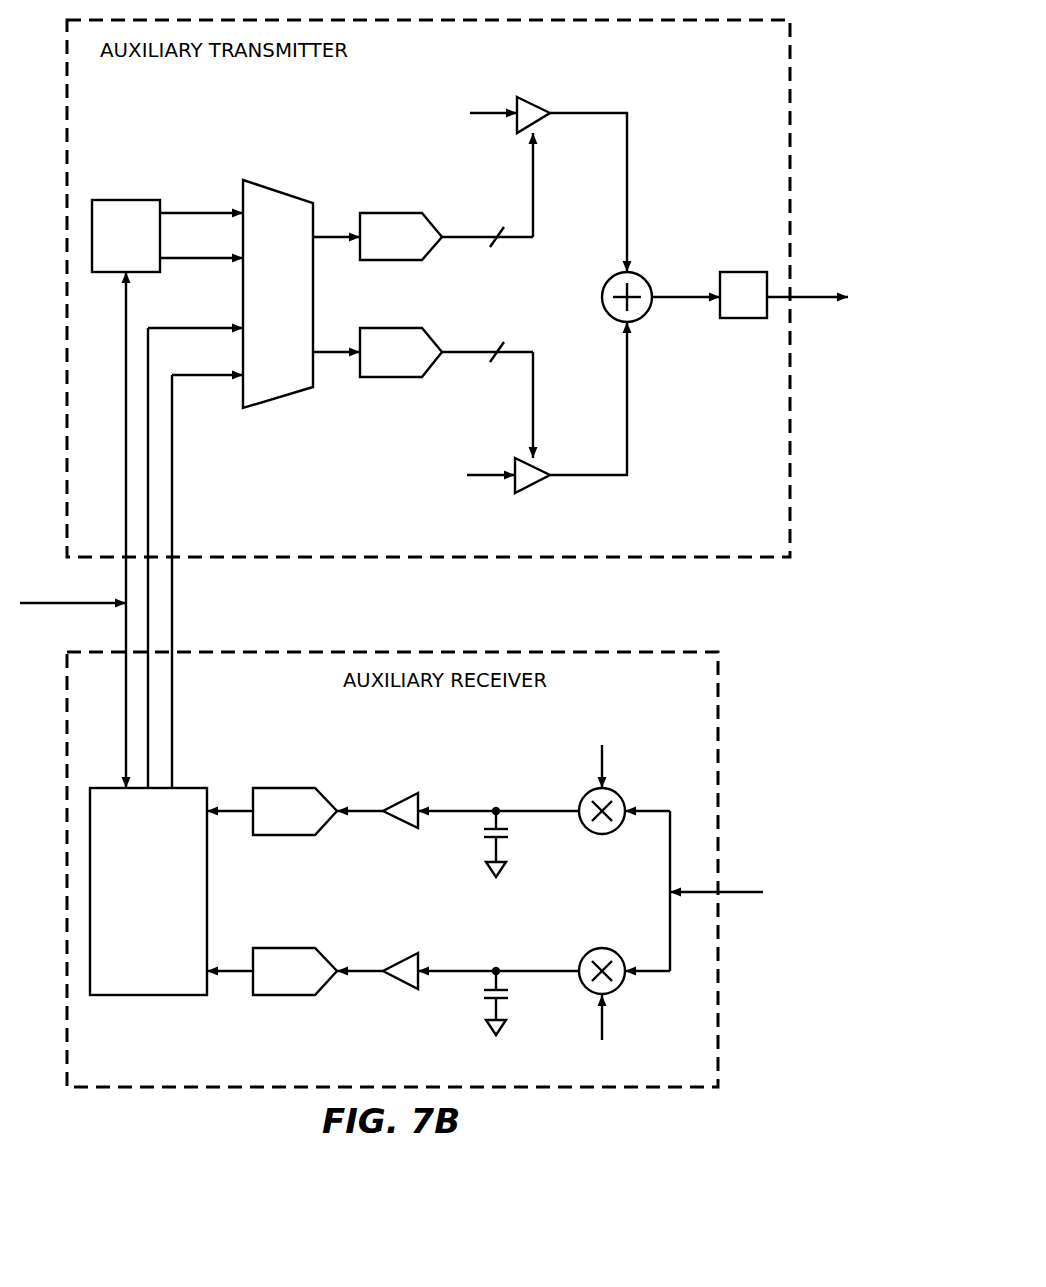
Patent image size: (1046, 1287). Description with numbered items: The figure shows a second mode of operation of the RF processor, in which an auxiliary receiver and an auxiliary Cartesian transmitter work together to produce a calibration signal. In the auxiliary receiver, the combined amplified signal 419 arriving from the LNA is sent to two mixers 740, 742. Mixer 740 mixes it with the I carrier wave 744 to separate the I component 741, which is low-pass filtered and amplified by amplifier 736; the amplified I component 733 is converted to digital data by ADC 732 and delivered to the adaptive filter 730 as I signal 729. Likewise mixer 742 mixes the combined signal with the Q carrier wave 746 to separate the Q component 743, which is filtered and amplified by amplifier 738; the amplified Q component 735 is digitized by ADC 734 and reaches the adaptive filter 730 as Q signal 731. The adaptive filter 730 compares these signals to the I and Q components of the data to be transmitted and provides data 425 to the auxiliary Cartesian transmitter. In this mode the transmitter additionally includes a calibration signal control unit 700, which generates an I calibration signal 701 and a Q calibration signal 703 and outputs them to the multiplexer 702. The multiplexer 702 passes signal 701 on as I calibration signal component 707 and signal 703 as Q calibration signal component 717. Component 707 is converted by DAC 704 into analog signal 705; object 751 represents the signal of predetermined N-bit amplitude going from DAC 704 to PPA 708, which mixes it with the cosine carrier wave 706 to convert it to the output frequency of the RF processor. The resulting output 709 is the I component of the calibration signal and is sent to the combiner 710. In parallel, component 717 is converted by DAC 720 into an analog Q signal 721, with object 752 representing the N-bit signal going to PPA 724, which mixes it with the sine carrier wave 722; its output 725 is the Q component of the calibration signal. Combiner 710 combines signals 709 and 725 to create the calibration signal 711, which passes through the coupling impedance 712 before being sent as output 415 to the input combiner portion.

The calibration signal control unit 700 is at (107, 249).
The I calibration signal 701 is at (213, 210).
The multiplexer 702 is at (259, 308).
The Q calibration signal 703 is at (212, 262).
The DAC 704 is at (389, 212).
The analog signal 705 is at (534, 180).
The cosine carrier wave 706 is at (494, 112).
The I calibration signal component 707 is at (329, 233).
The PPA 708 is at (534, 112).
The output 709 is at (628, 176).
The combiner 710 is at (645, 313).
The calibration signal 711 is at (680, 293).
The coupling impedance 712 is at (740, 271).
The output 415 is at (811, 298).
The data 425 is at (42, 602).
The Q calibration signal component 717 is at (330, 356).
The DAC 720 is at (390, 379).
The DAC output line 721 is at (534, 411).
The sine carrier wave 722 is at (488, 478).
The PPA 724 is at (535, 482).
The output 725 is at (628, 415).
The signal having a predetermined N-bit amplitude 751 is at (467, 233).
The signal having a predetermined N-bit amplitude 752 is at (467, 356).
The I signal 729 is at (238, 809).
The adaptive filter 730 is at (128, 938).
The Q signal 731 is at (237, 974).
The ADC 732 is at (293, 788).
The amplified I component 733 is at (367, 814).
The ADC 734 is at (283, 948).
The amplified Q component 735 is at (367, 970).
The amplifier 736 is at (399, 800).
The amplifier 738 is at (398, 984).
The mixer 740 is at (584, 795).
The I component 741 is at (460, 814).
The mixer 742 is at (585, 956).
The Q component 743 is at (460, 970).
The I carrier wave 744 is at (604, 766).
The Q carrier wave 746 is at (604, 1020).
The combined amplified signal 419 is at (746, 891).